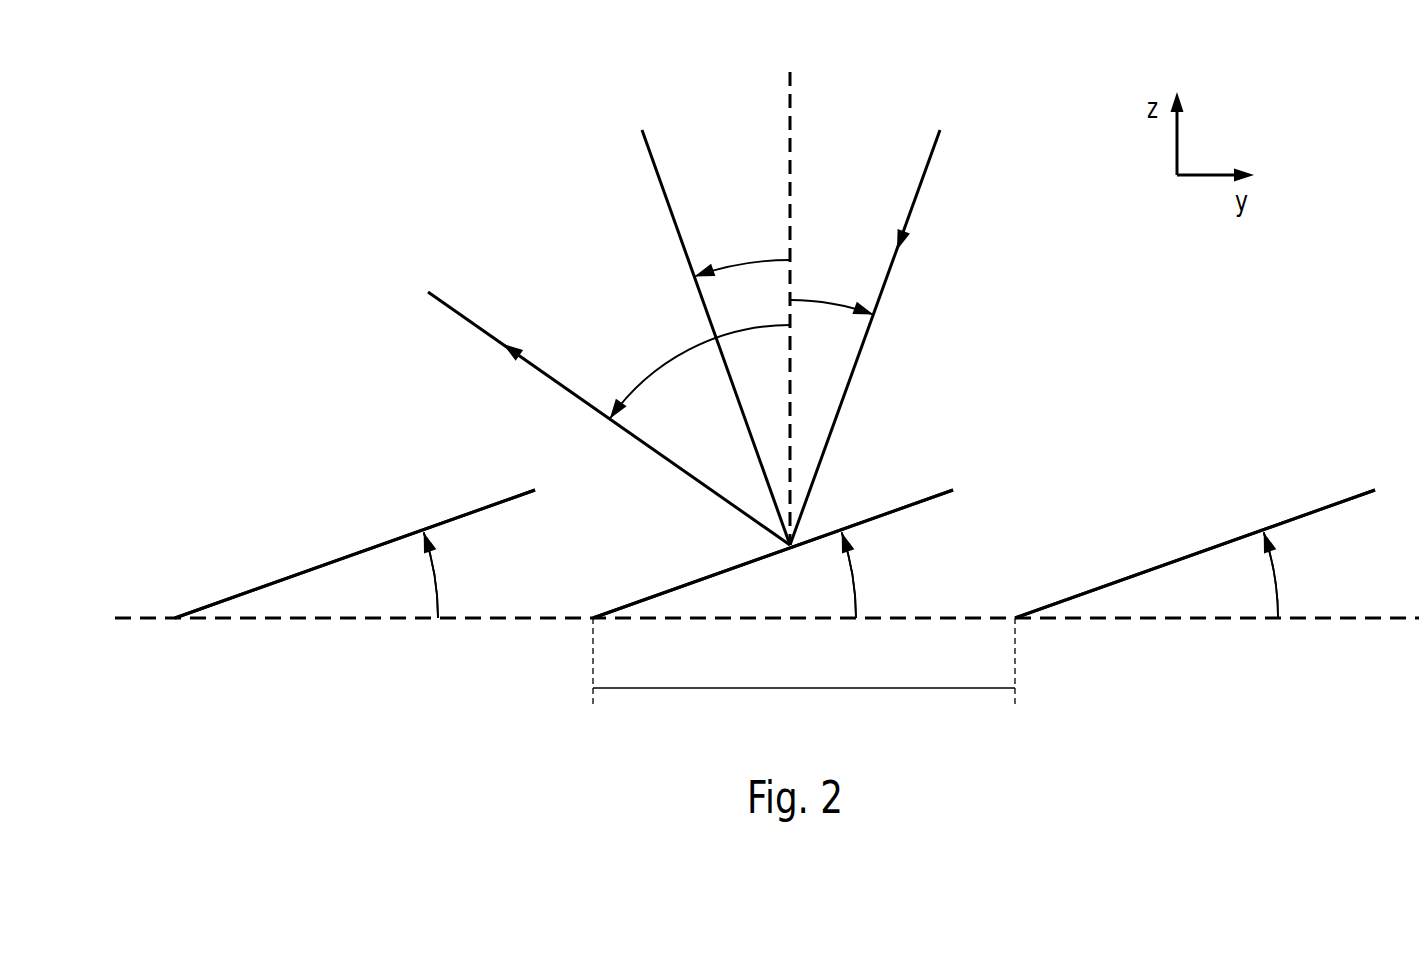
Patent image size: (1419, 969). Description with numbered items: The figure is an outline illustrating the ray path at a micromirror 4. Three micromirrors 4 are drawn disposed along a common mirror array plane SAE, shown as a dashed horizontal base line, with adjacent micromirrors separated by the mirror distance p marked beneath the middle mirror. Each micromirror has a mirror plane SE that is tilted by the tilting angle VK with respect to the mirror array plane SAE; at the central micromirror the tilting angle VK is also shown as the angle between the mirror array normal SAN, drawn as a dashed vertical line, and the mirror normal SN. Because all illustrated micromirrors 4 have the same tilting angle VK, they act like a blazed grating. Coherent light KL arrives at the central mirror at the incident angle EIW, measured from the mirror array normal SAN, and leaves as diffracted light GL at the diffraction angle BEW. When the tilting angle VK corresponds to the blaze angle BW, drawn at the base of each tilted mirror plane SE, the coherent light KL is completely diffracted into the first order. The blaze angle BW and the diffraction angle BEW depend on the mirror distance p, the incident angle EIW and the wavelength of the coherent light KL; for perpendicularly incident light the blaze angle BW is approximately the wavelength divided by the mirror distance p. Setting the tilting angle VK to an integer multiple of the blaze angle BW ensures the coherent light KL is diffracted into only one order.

The micromirror 4 is at (290, 577).
The mirror array normal SAN is at (792, 125).
The mirror normal SN is at (650, 160).
The coherent light KL is at (916, 200).
The diffracted light GL is at (450, 308).
The tilting angle VK is at (753, 262).
The incident angle EIW is at (838, 304).
The diffraction angle BEW is at (677, 357).
The mirror plane SE is at (463, 515).
The blaze angle BW is at (437, 598).
The mirror array plane SAE is at (327, 622).
The mirror distance p is at (804, 662).